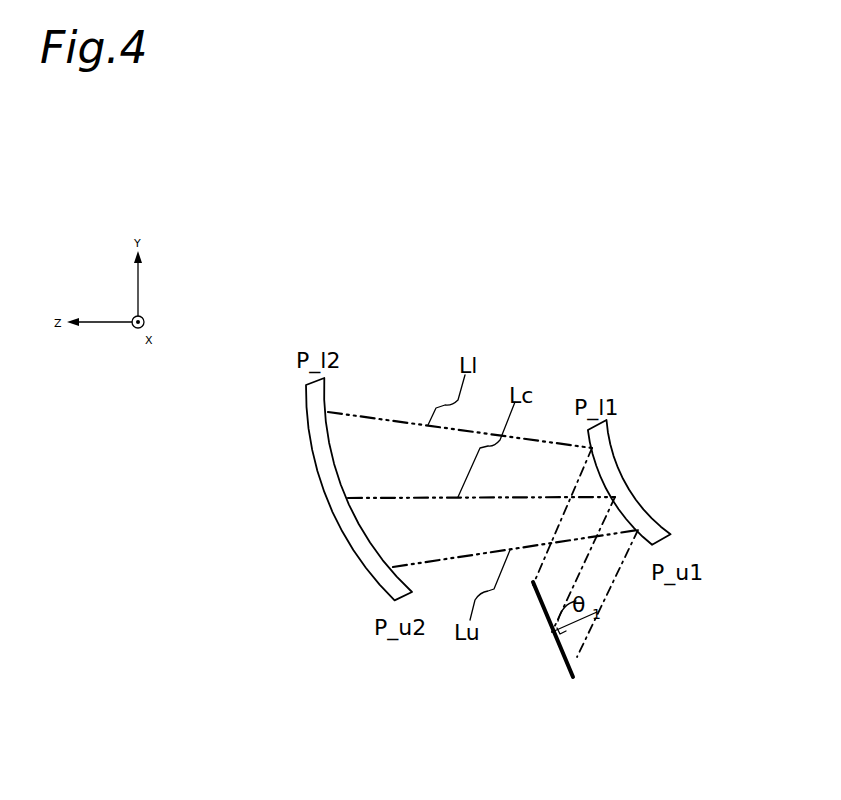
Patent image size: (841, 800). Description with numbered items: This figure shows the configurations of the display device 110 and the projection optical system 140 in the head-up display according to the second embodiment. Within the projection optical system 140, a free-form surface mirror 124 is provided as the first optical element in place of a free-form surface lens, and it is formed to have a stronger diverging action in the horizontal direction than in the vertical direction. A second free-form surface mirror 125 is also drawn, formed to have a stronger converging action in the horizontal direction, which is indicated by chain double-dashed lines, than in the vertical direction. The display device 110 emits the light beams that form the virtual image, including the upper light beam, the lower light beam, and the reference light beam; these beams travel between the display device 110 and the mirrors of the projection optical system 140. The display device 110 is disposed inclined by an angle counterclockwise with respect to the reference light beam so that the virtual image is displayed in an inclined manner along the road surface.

The projection optical system 140 is at (692, 345).
The free-form surface mirror 124 is at (622, 462).
The free-form surface mirror 125 is at (338, 530).
The display device 110 is at (552, 632).